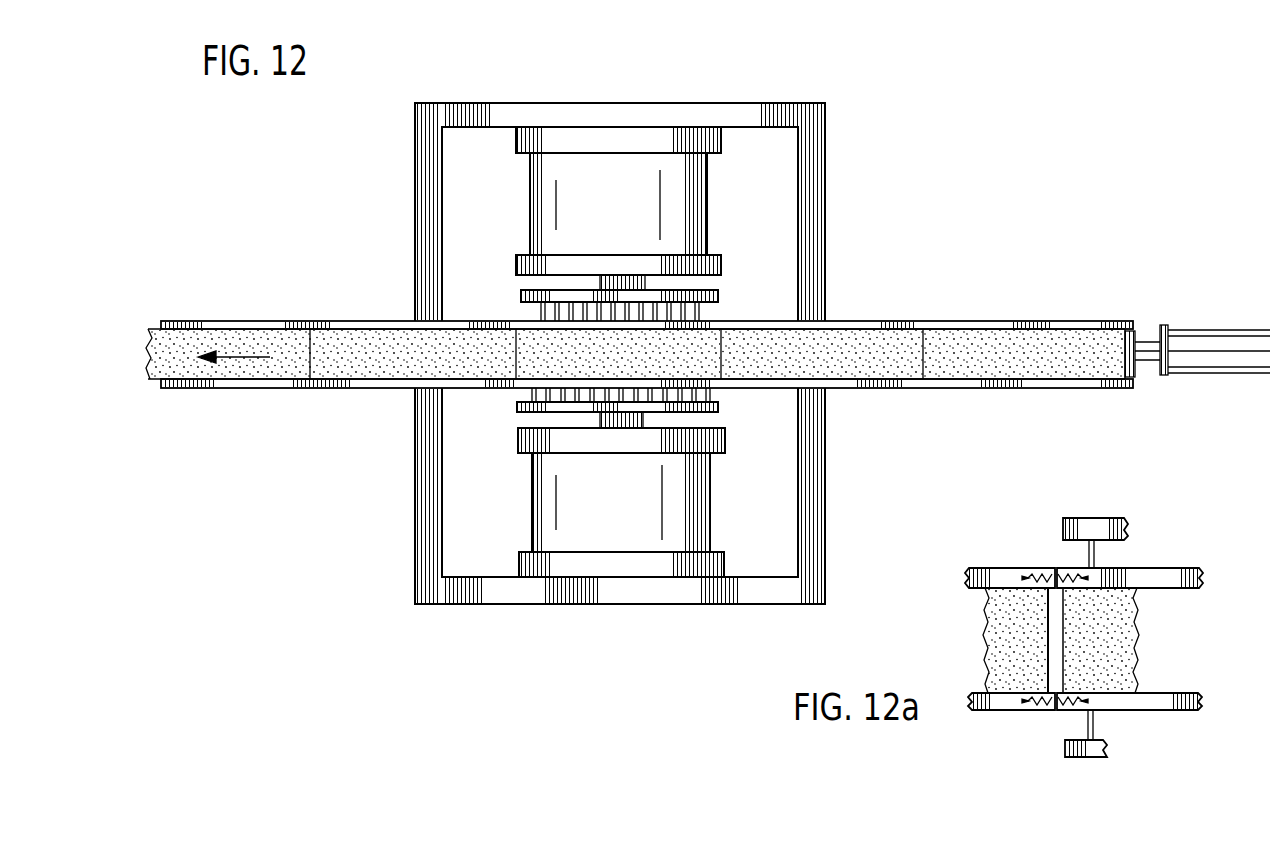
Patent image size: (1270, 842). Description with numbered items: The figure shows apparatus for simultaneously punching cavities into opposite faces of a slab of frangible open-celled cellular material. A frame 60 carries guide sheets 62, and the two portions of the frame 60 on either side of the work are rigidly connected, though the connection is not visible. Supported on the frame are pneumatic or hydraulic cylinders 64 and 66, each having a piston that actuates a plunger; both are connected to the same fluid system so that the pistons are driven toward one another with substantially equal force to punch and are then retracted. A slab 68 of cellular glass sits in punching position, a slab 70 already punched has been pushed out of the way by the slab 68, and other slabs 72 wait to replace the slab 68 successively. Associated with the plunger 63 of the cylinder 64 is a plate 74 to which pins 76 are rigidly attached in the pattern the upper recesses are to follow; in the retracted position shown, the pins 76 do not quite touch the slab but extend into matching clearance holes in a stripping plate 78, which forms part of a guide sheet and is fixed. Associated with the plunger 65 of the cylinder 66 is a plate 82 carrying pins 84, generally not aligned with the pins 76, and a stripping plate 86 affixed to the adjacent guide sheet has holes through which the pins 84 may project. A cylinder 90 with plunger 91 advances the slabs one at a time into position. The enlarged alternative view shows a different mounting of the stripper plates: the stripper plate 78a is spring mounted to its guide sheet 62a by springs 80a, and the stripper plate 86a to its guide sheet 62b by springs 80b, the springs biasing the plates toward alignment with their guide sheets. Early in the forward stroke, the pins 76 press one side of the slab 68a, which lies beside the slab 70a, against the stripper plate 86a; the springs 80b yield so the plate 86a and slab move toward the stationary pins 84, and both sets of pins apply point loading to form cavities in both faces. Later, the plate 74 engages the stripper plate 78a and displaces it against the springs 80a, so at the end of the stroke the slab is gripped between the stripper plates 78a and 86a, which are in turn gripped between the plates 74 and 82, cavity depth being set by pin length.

In FIG. 12, the frame 60 is at (809, 166).
In FIG. 12, the guide sheets 62 is at (363, 327).
In FIG. 12, the plunger 63 is at (616, 288).
In FIG. 12, the pneumatic or hydraulic cylinder 64 is at (665, 203).
In FIG. 12, the plunger 65 is at (623, 420).
In FIG. 12, the pneumatic or hydraulic cylinder 66 is at (660, 523).
In FIG. 12, the slab 68 is at (605, 366).
In FIG. 12, the slab 70 is at (401, 366).
In FIG. 12, the slabs 72 is at (806, 363).
In FIG. 12, the plate 74 is at (530, 293).
In FIG. 12A, the plate 74 is at (1082, 528).
In FIG. 12, the pins 76 is at (678, 318).
In FIG. 12A, the pins 76 is at (1096, 556).
In FIG. 12, the stripping plate 78 is at (578, 316).
In FIG. 12, the plate 82 is at (662, 407).
In FIG. 12A, the plate 82 is at (1080, 752).
In FIG. 12, the pins 84 is at (601, 393).
In FIG. 12A, the pins 84 is at (1094, 725).
In FIG. 12, the stripping plate 86 is at (530, 405).
In FIG. 12, the pneumatic or hydraulic cylinder 90 is at (1240, 350).
In FIG. 12, the plunger 91 is at (1146, 362).
In FIG. 12A, the guide sheet 62a is at (996, 578).
In FIG. 12A, the guide sheet 62b is at (986, 695).
In FIG. 12A, the slab 68a is at (1108, 628).
In FIG. 12A, the slab 70a is at (1010, 628).
In FIG. 12A, the stripper plate 78a is at (1157, 578).
In FIG. 12A, the spring 80a is at (1031, 574).
In FIG. 12A, the spring 80b is at (1040, 704).
In FIG. 12A, the stripper plate 86a is at (1153, 703).